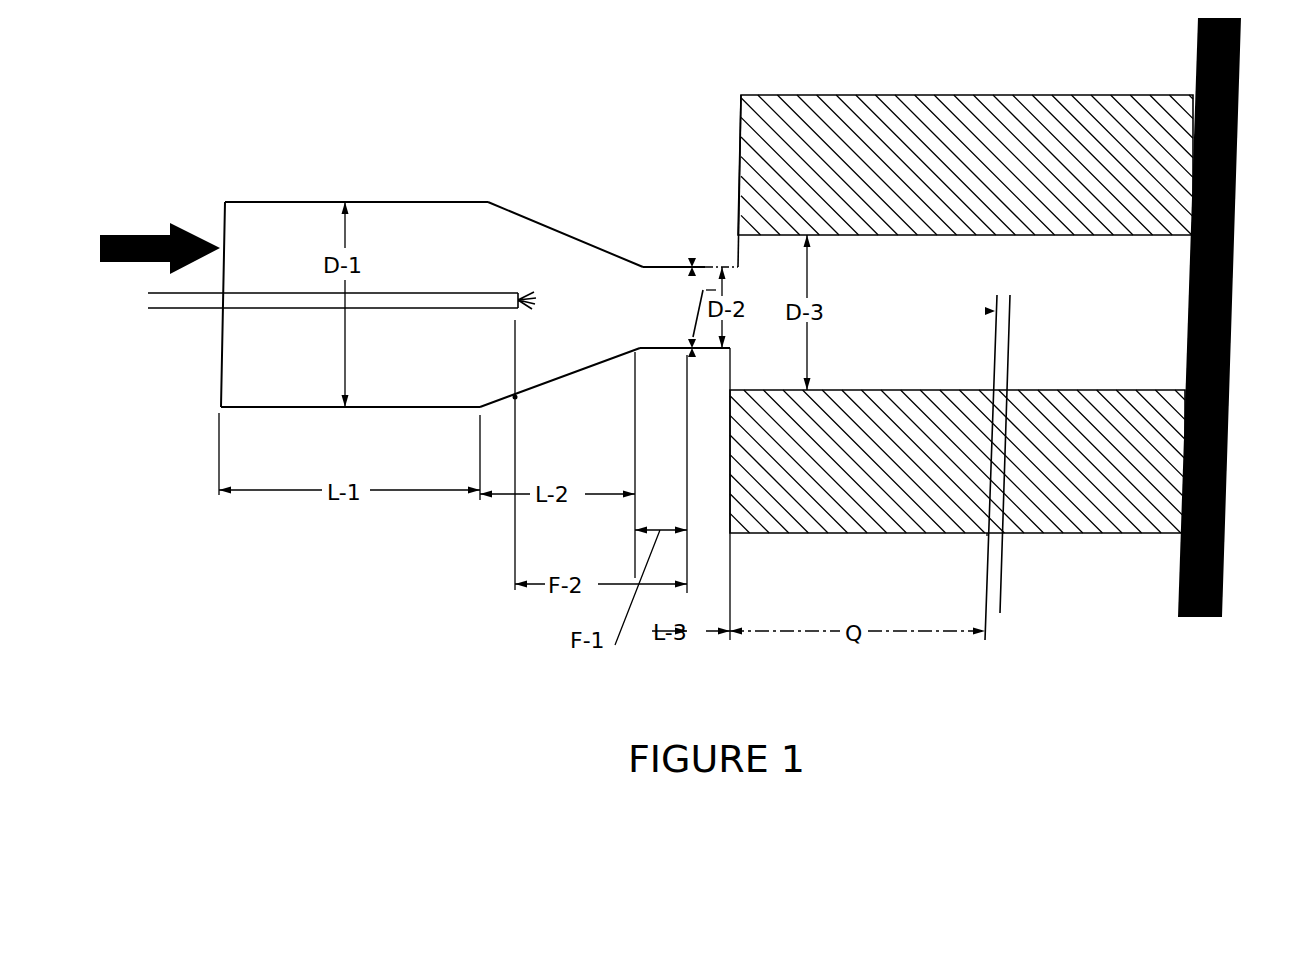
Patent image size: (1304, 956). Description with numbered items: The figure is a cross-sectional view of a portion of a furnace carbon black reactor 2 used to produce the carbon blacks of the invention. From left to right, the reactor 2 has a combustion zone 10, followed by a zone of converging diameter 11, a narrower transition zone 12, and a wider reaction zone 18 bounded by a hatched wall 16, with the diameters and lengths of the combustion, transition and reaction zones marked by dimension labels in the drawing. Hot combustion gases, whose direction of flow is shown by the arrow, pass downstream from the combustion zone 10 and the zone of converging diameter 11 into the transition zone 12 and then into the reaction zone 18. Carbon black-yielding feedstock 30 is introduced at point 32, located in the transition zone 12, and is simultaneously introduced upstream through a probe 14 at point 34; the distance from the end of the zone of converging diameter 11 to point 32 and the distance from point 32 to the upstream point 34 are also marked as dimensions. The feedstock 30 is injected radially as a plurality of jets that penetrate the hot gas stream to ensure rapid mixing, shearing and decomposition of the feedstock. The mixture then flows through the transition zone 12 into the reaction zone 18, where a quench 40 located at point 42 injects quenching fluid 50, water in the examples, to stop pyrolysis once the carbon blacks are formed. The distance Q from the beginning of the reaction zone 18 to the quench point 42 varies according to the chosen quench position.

The furnace carbon black reactor 2 is at (479, 275).
The combustion zone 10 is at (265, 218).
The zone of converging diameter 11 is at (555, 257).
The transition zone 12 is at (677, 308).
The probe 14 is at (268, 303).
The upper wall block of chamber 16 is at (752, 242).
The reaction zone 18 is at (860, 265).
The carbon black-yielding feedstock 30 is at (730, 287).
The point of feedstock introduction in transition zone 32 is at (690, 260).
The upstream point of feedstock introduction 34 is at (515, 397).
The quench 40 is at (1005, 348).
The quench point 42 is at (987, 535).
The quenching fluid 50 is at (983, 297).